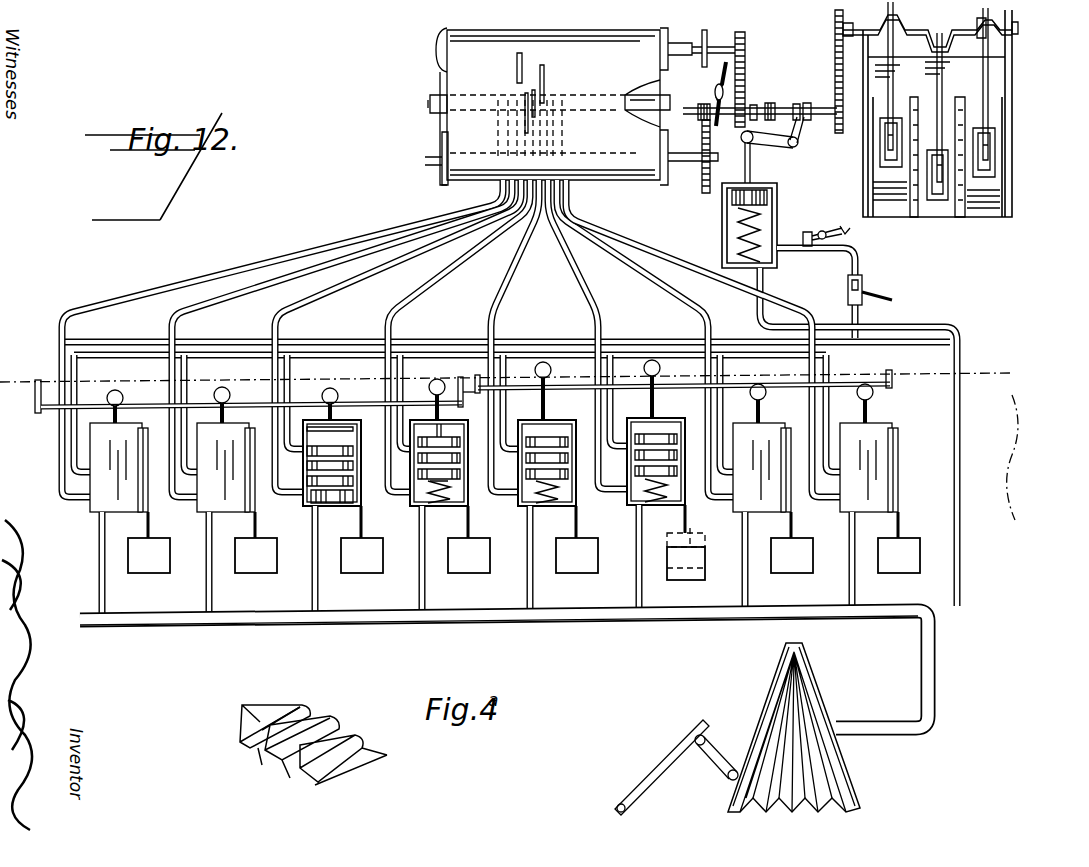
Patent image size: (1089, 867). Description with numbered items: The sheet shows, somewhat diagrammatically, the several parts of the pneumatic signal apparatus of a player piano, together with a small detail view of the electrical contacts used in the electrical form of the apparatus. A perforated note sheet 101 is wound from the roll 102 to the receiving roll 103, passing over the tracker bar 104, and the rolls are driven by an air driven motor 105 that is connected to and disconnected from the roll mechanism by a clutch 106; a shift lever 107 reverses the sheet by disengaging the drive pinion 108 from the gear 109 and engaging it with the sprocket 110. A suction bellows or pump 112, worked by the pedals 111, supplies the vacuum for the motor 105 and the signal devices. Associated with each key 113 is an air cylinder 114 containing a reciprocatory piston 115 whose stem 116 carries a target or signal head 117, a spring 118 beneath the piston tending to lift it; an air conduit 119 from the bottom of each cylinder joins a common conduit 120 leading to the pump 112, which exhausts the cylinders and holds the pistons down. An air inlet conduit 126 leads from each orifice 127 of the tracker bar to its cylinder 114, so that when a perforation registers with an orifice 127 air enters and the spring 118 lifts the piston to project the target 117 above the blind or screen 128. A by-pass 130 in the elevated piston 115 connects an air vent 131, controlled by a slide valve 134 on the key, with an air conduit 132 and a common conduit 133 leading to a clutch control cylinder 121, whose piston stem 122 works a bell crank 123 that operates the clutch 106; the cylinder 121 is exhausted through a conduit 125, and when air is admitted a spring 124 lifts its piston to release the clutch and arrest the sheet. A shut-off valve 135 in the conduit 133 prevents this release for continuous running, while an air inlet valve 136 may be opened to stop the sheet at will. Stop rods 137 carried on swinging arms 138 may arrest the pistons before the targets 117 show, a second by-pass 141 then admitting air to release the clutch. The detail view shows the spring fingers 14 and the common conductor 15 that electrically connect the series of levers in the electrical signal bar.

In FIG. 12, the perforated note sheet 101 is at (591, 106).
In FIG. 12, the roll 102 is at (440, 42).
In FIG. 12, the receiving roll 103 is at (438, 150).
In FIG. 12, the tracker bar 104 is at (430, 104).
In FIG. 12, the air driven motor 105 is at (955, 109).
In FIG. 12, the clutch 106 is at (790, 98).
In FIG. 12, the shift lever 107 is at (716, 86).
In FIG. 12, the drive pinion 108 is at (702, 118).
In FIG. 12, the gear 109 is at (702, 192).
In FIG. 12, the sprocket 110 is at (731, 133).
In FIG. 12, the pedals 111 is at (668, 760).
In FIG. 12, the suction bellows or pump 112 is at (812, 686).
In FIG. 12, the key 113 is at (350, 574).
In FIG. 12, the air cylinder 114 is at (95, 518).
In FIG. 12, the reciprocatory piston 115 is at (414, 470).
In FIG. 12, the stem 116 is at (238, 410).
In FIG. 12, the target or signal head 117 is at (322, 396).
In FIG. 12, the spring 118 is at (456, 508).
In FIG. 12, the air conduit 119 is at (318, 588).
In FIG. 12, the common conduit 120 is at (500, 630).
In FIG. 12, the clutch control cylinder 121 is at (780, 222).
In FIG. 12, the stem 122 is at (752, 165).
In FIG. 12, the bell crank 123 is at (800, 145).
In FIG. 12, the spring 124 is at (724, 238).
In FIG. 12, the conduit 125 is at (895, 326).
In FIG. 12, the air inlet conduit 126 is at (408, 297).
In FIG. 12, the orifice 127 is at (633, 110).
In FIG. 12, the blind or screen 128 is at (25, 412).
In FIG. 12, the by-pass 130 is at (306, 510).
In FIG. 12, the air vent 131 is at (362, 448).
In FIG. 12, the air conduit 132 is at (288, 378).
In FIG. 12, the common conduit 133 is at (440, 343).
In FIG. 12, the slide valve 134 is at (356, 524).
In FIG. 12, the shut-off valve 135 is at (864, 291).
In FIG. 12, the air inlet valve 136 is at (812, 240).
In FIG. 12, the stop rod 137 is at (750, 376).
In FIG. 12, the swinging arm 138 is at (472, 374).
In FIG. 12, the second by-pass 141 is at (554, 449).
In FIG. 4A, the spring finger 14 is at (302, 784).
In FIG. 4A, the common conductor 15 is at (270, 700).